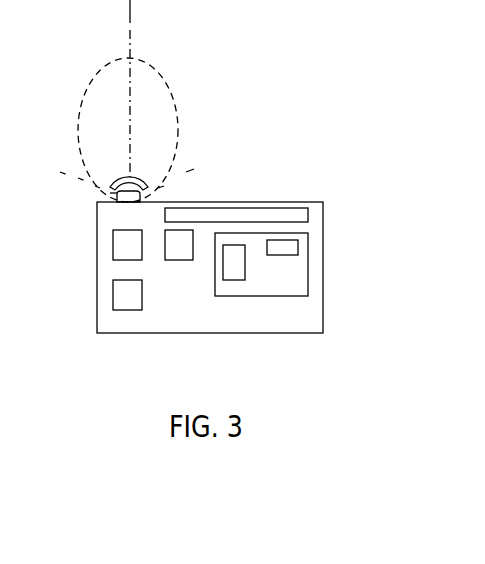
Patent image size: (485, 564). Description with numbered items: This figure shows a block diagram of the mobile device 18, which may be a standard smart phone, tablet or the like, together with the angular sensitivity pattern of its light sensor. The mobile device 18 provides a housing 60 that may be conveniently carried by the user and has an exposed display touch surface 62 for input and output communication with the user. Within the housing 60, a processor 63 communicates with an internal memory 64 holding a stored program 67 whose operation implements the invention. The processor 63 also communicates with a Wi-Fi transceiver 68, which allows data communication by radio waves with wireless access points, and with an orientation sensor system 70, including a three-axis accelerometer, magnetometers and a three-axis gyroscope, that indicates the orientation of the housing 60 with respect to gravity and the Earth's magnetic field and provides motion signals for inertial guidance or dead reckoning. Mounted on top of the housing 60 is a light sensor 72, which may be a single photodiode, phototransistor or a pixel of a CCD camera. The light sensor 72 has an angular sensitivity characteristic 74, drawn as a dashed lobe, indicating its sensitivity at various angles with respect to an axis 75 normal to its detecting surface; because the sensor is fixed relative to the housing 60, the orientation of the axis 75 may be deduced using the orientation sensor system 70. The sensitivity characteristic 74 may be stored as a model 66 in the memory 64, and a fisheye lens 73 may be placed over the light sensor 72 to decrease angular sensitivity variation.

The mobile device 18 is at (338, 170).
The housing 60 is at (323, 272).
The display touch surface 62 is at (284, 208).
The processor 63 is at (175, 260).
The internal memory 64 is at (282, 296).
The model 66 is at (235, 280).
The stored program 67 is at (288, 255).
The Wi-Fi transceiver 68 is at (113, 292).
The orientation sensor system 70 is at (113, 238).
The light sensor 72 is at (175, 184).
The fisheye lens 73 is at (137, 177).
The angular sensitivity characteristic 74 is at (175, 110).
The axis 75 is at (130, 23).